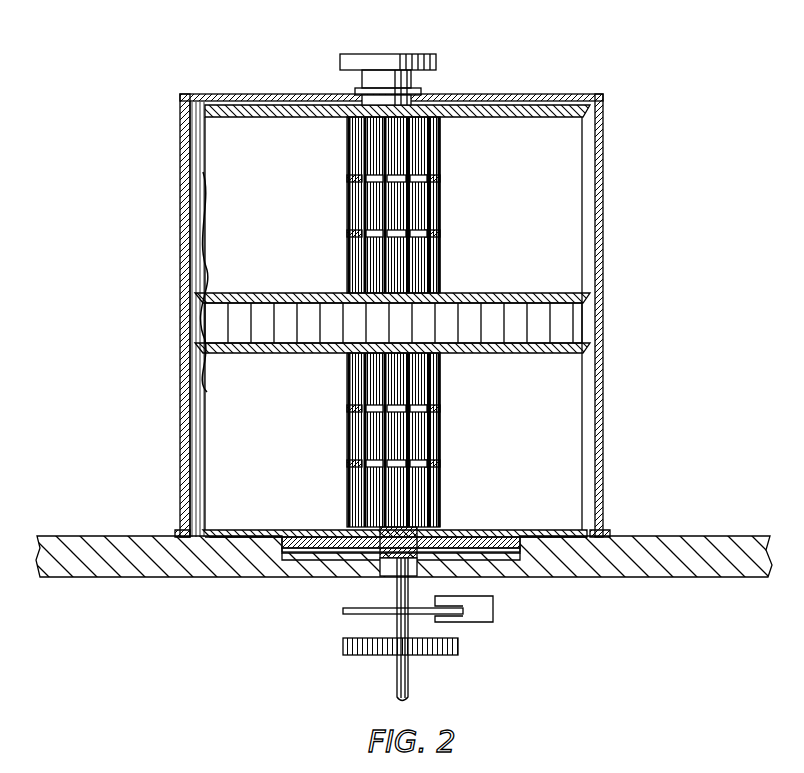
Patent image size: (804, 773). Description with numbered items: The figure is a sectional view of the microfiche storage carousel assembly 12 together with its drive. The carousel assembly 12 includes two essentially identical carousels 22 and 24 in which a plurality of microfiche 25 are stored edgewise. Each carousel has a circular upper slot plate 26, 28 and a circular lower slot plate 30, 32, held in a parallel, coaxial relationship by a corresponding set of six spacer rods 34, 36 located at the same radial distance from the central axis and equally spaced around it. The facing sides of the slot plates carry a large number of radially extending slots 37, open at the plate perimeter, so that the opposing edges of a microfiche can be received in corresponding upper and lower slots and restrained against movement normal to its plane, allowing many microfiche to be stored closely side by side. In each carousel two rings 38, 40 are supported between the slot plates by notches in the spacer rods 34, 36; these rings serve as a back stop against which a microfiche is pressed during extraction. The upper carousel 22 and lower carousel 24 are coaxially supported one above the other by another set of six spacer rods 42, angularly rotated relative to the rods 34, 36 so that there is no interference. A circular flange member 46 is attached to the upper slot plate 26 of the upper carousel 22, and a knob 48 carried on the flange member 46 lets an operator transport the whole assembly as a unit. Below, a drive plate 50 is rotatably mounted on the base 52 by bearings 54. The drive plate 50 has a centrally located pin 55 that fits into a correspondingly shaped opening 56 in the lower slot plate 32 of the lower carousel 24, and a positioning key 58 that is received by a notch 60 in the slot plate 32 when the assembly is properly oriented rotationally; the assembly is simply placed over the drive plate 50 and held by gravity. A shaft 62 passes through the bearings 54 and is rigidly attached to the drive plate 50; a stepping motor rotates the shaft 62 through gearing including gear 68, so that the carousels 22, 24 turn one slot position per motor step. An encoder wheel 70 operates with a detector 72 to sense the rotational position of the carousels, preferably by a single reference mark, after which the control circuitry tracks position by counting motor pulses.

The carousel assembly 12 is at (628, 88).
The upper carousel 22 is at (158, 218).
The lower carousel 24 is at (159, 443).
The microfiche 25 is at (190, 330).
The upper slot plate 26 is at (250, 118).
The upper slot plate 28 is at (258, 353).
The lower slot plate 30 is at (281, 296).
The lower slot plate 32 is at (228, 530).
The spacer rods 34 is at (433, 142).
The spacer rods 36 is at (430, 372).
The slots 37 is at (203, 172).
The ring 38 is at (440, 236).
The ring 40 is at (440, 466).
The spacer rods 42 is at (415, 320).
The flange member 46 is at (421, 90).
The knob 48 is at (402, 56).
The drive plate 50 is at (318, 560).
The base 52 is at (660, 537).
The bearings 54 is at (398, 580).
The pin 55 is at (402, 524).
The opening 56 is at (432, 536).
The positioning key 58 is at (312, 535).
The notch 60 is at (303, 536).
The shaft 62 is at (402, 686).
The gear 68 is at (458, 648).
The encoder wheel 70 is at (345, 612).
The detector 72 is at (494, 607).